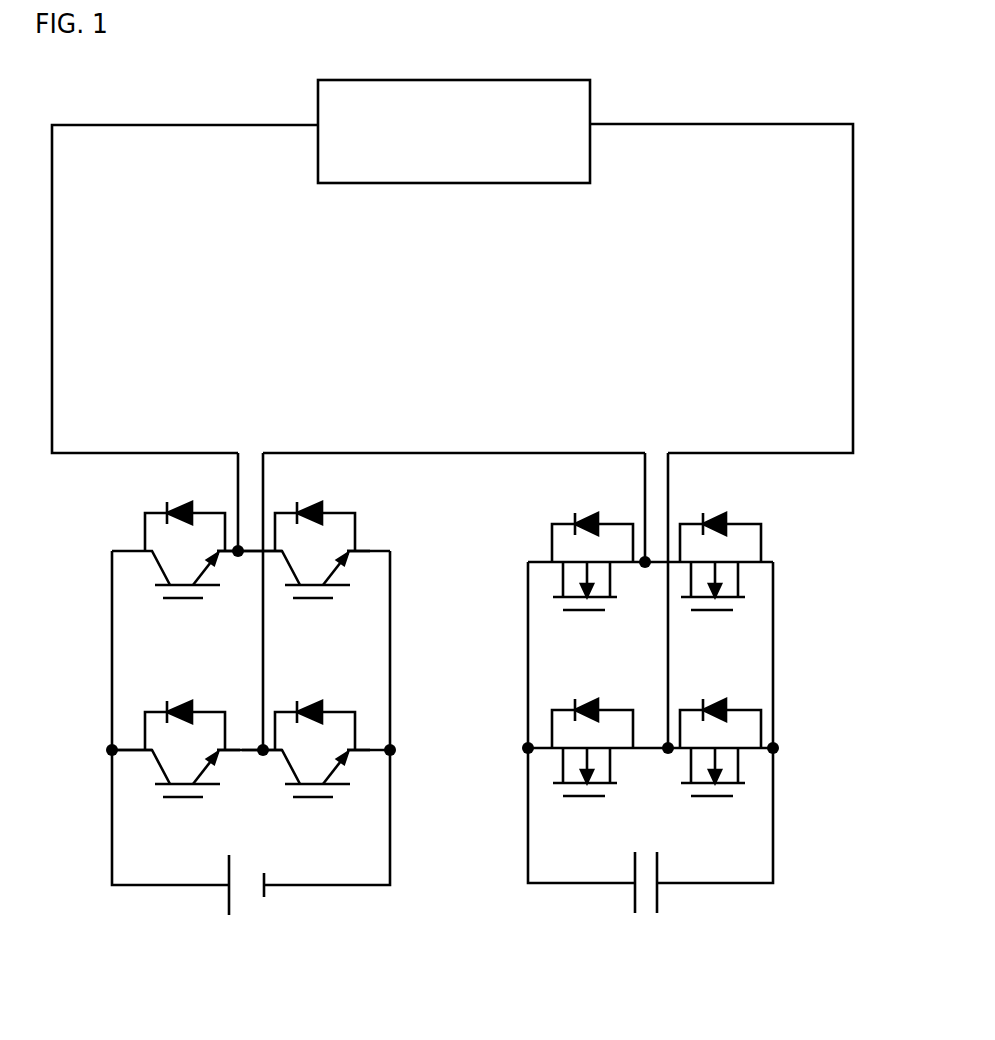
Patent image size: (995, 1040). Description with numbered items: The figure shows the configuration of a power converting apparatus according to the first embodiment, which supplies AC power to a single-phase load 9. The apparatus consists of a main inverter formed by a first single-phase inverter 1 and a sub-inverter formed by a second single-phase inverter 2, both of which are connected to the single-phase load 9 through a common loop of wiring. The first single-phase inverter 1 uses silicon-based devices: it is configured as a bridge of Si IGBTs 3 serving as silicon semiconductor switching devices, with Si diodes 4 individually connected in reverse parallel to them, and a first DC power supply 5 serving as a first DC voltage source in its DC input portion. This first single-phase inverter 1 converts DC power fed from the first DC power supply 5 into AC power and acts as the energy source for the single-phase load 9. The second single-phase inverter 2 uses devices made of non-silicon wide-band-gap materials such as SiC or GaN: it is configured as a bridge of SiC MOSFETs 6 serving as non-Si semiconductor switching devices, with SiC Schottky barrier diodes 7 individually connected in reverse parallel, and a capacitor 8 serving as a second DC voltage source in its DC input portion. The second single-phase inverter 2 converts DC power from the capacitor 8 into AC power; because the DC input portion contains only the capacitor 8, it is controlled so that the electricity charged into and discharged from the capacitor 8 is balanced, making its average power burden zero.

The first single-phase inverter 1 is at (259, 669).
The second single-phase inverter 2 is at (661, 668).
The Si IGBT 3 is at (367, 583).
The Si diode 4 is at (327, 500).
The first DC power supply 5 is at (248, 908).
The SiC MOSFET 6 is at (757, 775).
The SiC Schottky barrier diode 7 is at (740, 698).
The capacitor 8 is at (670, 908).
The single-phase load 9 is at (400, 80).